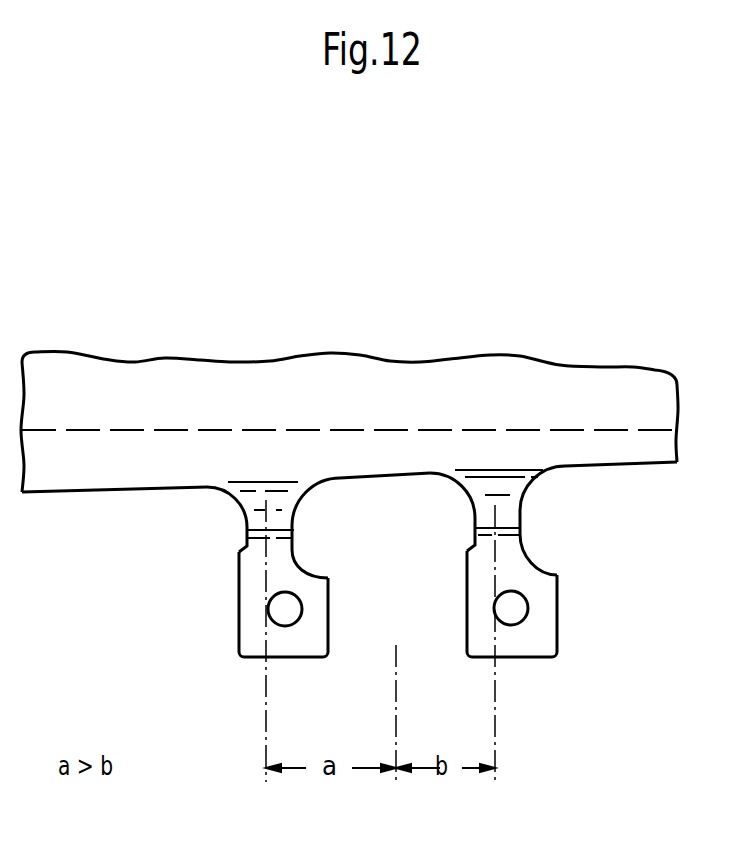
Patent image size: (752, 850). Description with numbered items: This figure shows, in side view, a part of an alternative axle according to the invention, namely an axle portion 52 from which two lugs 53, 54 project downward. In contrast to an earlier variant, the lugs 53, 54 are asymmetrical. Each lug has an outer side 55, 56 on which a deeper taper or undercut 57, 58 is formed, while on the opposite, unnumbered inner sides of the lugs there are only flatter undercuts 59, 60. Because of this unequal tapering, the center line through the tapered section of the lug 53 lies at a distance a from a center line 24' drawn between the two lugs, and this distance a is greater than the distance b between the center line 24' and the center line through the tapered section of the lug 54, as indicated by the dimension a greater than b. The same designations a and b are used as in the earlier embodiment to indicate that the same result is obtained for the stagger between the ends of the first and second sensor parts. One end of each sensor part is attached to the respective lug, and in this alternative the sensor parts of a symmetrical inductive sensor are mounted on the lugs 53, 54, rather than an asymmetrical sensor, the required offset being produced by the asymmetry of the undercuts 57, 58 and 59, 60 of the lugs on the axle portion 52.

The axle portion 52 is at (113, 477).
The lug 53 is at (238, 652).
The lug 54 is at (557, 657).
The outer side 55 is at (326, 577).
The outer side 56 is at (557, 575).
The undercut 57 is at (293, 537).
The undercut 58 is at (522, 535).
The undercut 59 is at (247, 523).
The undercut 60 is at (474, 507).
The center line 24' is at (430, 713).